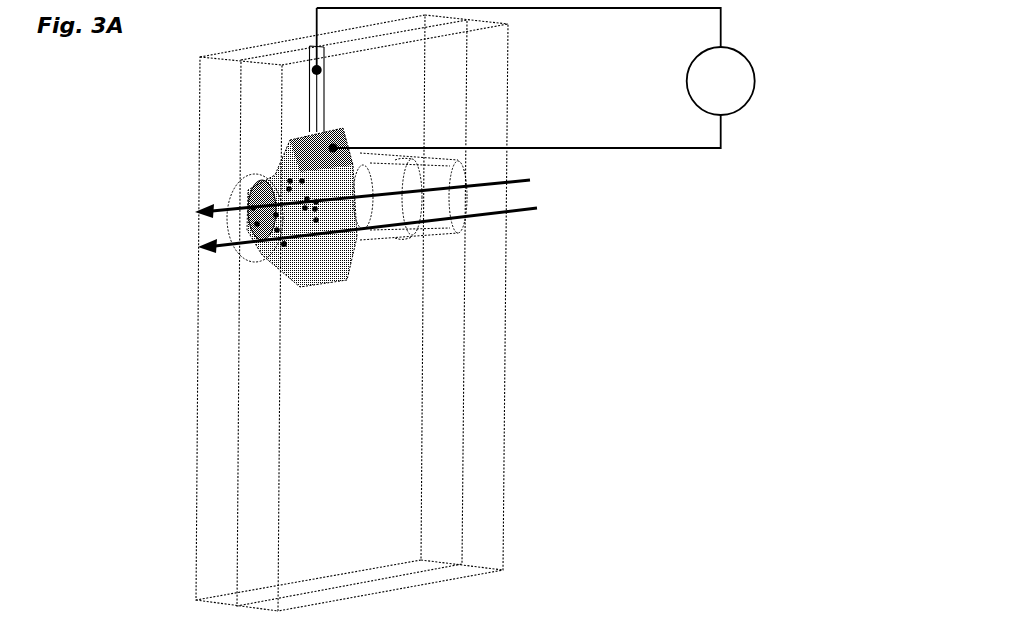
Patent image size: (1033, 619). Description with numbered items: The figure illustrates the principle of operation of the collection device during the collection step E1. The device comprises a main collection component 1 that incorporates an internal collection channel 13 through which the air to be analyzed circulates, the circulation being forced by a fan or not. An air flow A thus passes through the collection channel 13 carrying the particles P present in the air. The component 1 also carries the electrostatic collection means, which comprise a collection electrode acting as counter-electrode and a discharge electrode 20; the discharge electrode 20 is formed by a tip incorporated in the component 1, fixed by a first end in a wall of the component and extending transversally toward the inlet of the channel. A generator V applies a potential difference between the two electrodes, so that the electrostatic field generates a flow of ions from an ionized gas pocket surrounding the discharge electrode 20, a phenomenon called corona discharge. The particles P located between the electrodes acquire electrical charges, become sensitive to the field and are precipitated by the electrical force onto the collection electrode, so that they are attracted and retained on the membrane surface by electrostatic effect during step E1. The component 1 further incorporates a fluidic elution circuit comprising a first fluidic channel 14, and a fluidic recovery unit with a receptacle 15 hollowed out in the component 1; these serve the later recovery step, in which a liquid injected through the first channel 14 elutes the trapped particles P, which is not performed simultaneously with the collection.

The main collection component 1 is at (505, 345).
The internal collection channel 13 is at (232, 224).
The first fluidic channel 14 is at (311, 97).
The receptacle 15 is at (268, 272).
The discharge electrode 20 is at (412, 192).
The air flow A is at (366, 203).
The particles P is at (284, 244).
The collection step E1 is at (225, 80).
The generator V is at (536, 78).